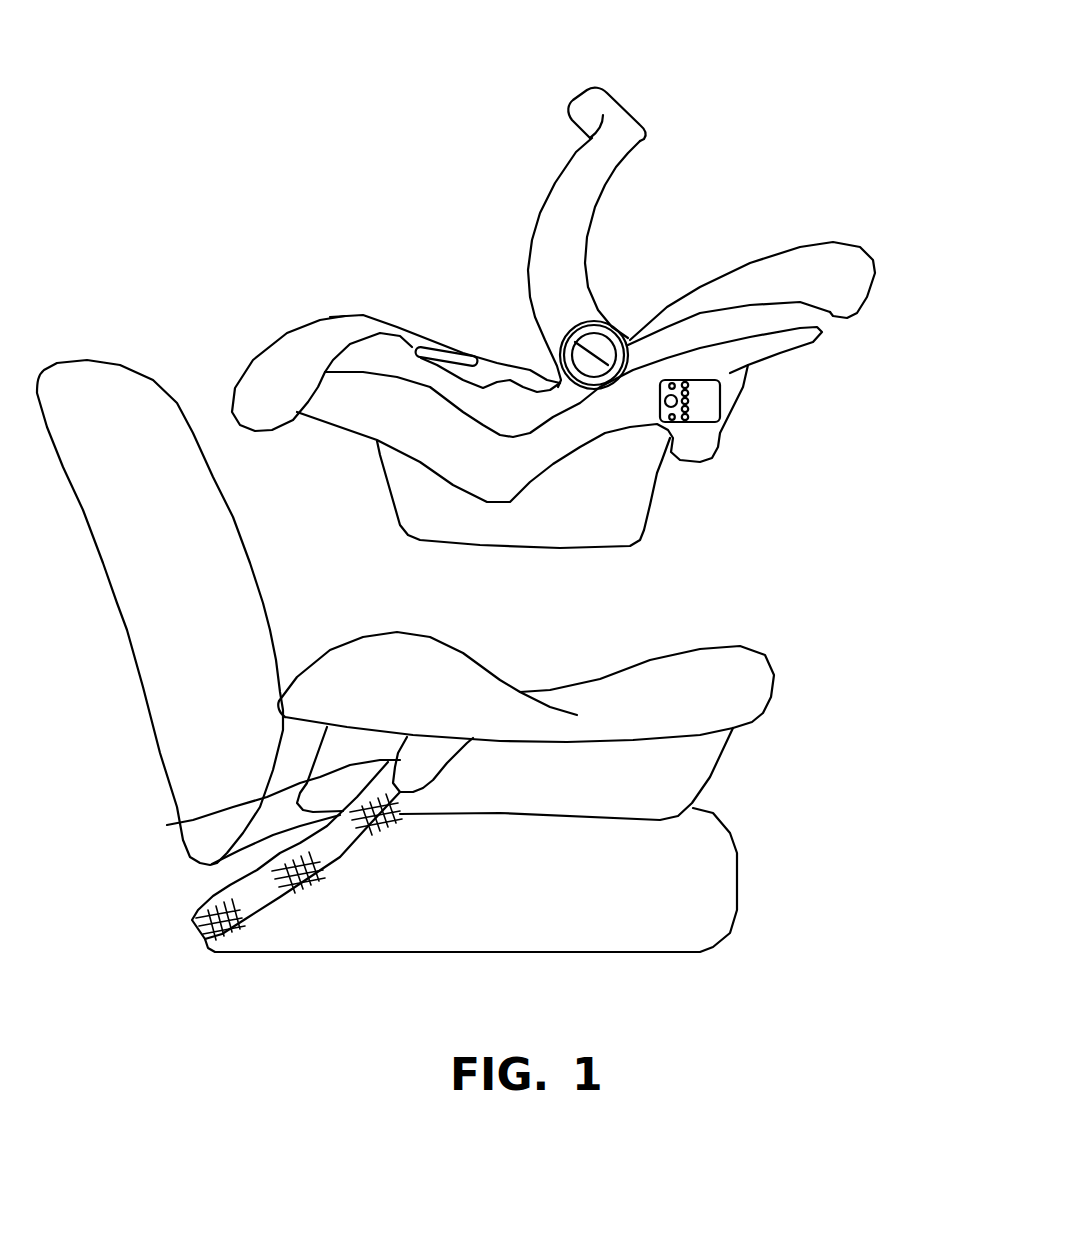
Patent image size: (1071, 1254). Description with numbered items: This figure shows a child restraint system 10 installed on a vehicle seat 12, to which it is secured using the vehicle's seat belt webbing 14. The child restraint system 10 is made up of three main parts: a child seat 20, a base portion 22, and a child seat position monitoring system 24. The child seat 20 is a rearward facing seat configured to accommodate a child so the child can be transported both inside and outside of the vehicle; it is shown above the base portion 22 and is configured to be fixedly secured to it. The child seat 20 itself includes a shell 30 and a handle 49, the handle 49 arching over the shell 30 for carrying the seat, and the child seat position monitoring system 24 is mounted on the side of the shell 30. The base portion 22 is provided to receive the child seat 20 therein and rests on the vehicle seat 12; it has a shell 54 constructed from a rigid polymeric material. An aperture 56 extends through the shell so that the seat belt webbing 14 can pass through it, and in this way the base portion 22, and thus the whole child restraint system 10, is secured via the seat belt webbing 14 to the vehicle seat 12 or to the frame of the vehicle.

The child restraint system 10 is at (903, 291).
The vehicle seat 12 is at (713, 930).
The seat belt webbing 14 is at (270, 895).
The child seat 20 is at (819, 343).
The base portion 22 is at (761, 741).
The child seat position monitoring system 24 is at (720, 420).
The shell 30 is at (657, 473).
The handle 49 is at (623, 120).
The shell 54 is at (713, 777).
The aperture 56 is at (167, 825).